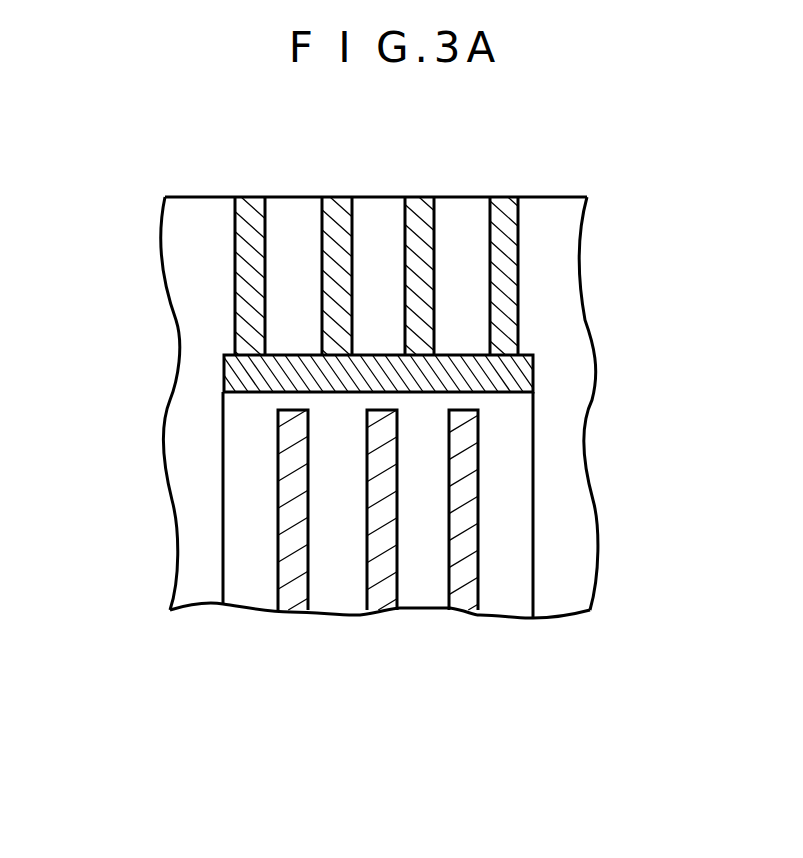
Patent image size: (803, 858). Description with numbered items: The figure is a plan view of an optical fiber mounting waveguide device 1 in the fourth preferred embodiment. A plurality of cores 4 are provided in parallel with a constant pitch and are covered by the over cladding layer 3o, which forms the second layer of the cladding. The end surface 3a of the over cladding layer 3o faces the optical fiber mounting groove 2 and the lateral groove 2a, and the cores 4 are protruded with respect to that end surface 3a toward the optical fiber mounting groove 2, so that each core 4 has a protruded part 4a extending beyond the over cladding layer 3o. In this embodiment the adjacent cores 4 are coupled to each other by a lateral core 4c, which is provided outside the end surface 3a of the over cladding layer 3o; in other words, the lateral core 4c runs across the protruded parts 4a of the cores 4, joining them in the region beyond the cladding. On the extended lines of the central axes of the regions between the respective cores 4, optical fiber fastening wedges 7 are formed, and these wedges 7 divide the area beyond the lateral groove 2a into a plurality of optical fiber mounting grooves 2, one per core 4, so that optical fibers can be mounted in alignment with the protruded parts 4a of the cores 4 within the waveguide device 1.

The optical fiber mounting waveguide device 1 is at (379, 407).
The optical fiber mounting groove 2 is at (240, 590).
The lateral groove 2a is at (280, 402).
The over cladding layer 3o is at (288, 197).
The end surface 3a is at (460, 393).
The core 4 is at (503, 197).
The protruded part 4a is at (513, 371).
The lateral core 4c is at (480, 393).
The optical fiber fastening wedge 7 is at (296, 588).